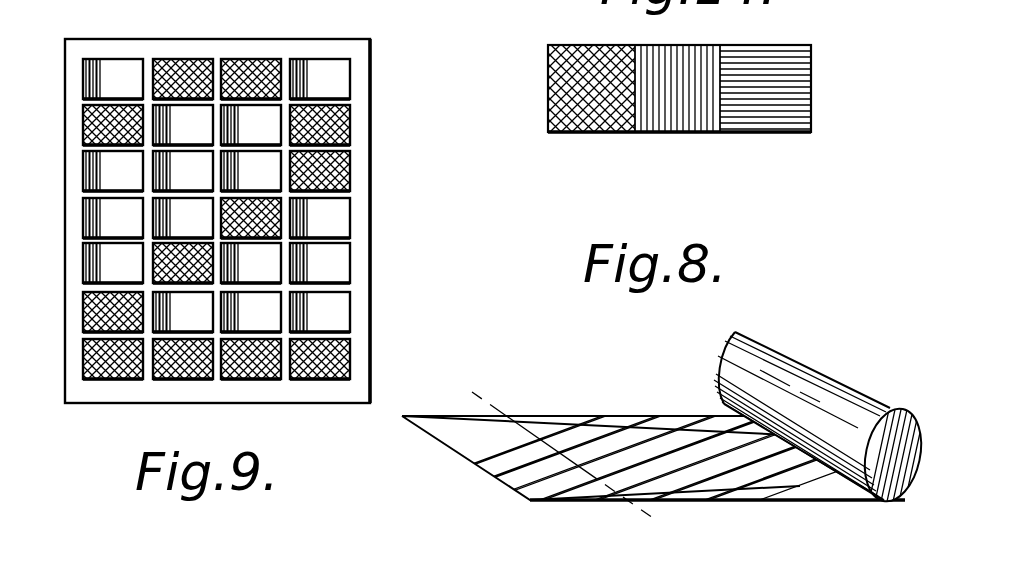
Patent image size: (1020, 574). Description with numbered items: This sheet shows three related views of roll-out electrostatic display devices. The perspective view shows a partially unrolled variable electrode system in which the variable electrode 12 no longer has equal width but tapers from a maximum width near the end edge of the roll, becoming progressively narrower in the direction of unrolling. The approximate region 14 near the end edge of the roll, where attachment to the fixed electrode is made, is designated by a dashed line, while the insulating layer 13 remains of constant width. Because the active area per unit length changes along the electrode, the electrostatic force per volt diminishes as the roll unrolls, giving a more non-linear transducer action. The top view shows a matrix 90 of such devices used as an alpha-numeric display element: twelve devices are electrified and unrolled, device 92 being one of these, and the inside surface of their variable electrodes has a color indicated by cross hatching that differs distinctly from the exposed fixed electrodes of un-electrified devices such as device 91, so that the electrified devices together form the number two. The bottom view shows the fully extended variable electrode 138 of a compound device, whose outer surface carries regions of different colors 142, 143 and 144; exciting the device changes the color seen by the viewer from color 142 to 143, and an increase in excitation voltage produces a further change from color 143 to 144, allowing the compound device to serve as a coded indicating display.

In FIG. 9, the matrix 90 is at (222, 220).
In FIG. 9, the un-electrified device 91 is at (338, 272).
In FIG. 9, the electrified device 92 is at (337, 365).
In FIG. 14, the variable electrode 138 is at (728, 110).
In FIG. 14, the first color region 142 is at (608, 113).
In FIG. 14, the second color region 143 is at (693, 100).
In FIG. 14, the third color region 144 is at (750, 107).
In FIG. 8, the variable electrode 12 is at (608, 450).
In FIG. 8, the insulating layer 13 is at (770, 493).
In FIG. 8, the attachment region 14 is at (596, 472).